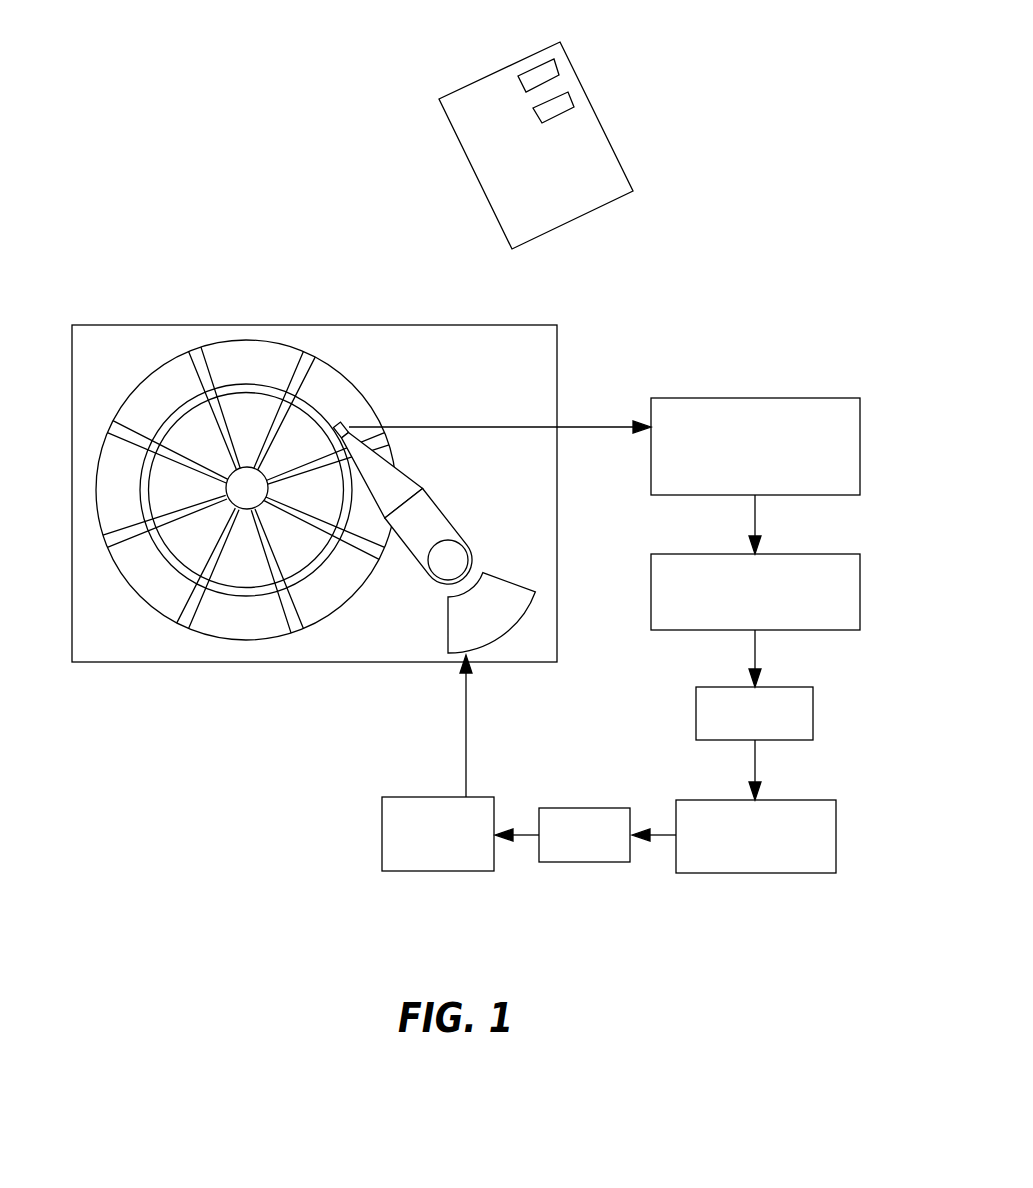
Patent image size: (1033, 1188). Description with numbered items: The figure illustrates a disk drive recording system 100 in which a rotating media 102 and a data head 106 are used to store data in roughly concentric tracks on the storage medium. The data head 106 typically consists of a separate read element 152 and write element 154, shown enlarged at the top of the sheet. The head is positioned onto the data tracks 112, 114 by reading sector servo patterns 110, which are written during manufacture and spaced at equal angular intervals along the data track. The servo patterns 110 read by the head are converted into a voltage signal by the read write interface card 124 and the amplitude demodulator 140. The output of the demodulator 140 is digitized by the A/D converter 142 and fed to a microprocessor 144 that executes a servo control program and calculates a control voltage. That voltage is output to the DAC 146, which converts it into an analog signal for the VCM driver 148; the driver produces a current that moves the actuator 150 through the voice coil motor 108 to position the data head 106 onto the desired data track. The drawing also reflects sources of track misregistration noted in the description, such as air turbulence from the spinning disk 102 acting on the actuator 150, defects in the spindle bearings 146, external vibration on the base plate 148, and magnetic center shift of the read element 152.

The disk drive system 100 is at (364, 576).
The rotating media 102 is at (247, 368).
The data head 106 is at (495, 220).
The voice coil motor (VCM) 108 is at (450, 633).
The sector servo patterns 110 is at (315, 357).
The data track 112 is at (166, 418).
The data track 114 is at (198, 405).
The read write interface card 124 is at (807, 398).
The amplitude demodulator 140 is at (810, 554).
The A/D converter 142 is at (792, 687).
The microprocessor 144 is at (802, 800).
The DAC 146 is at (237, 487).
The VCM driver 148 is at (408, 797).
The actuator 150 is at (433, 500).
The read element 152 is at (572, 96).
The write element 154 is at (560, 65).